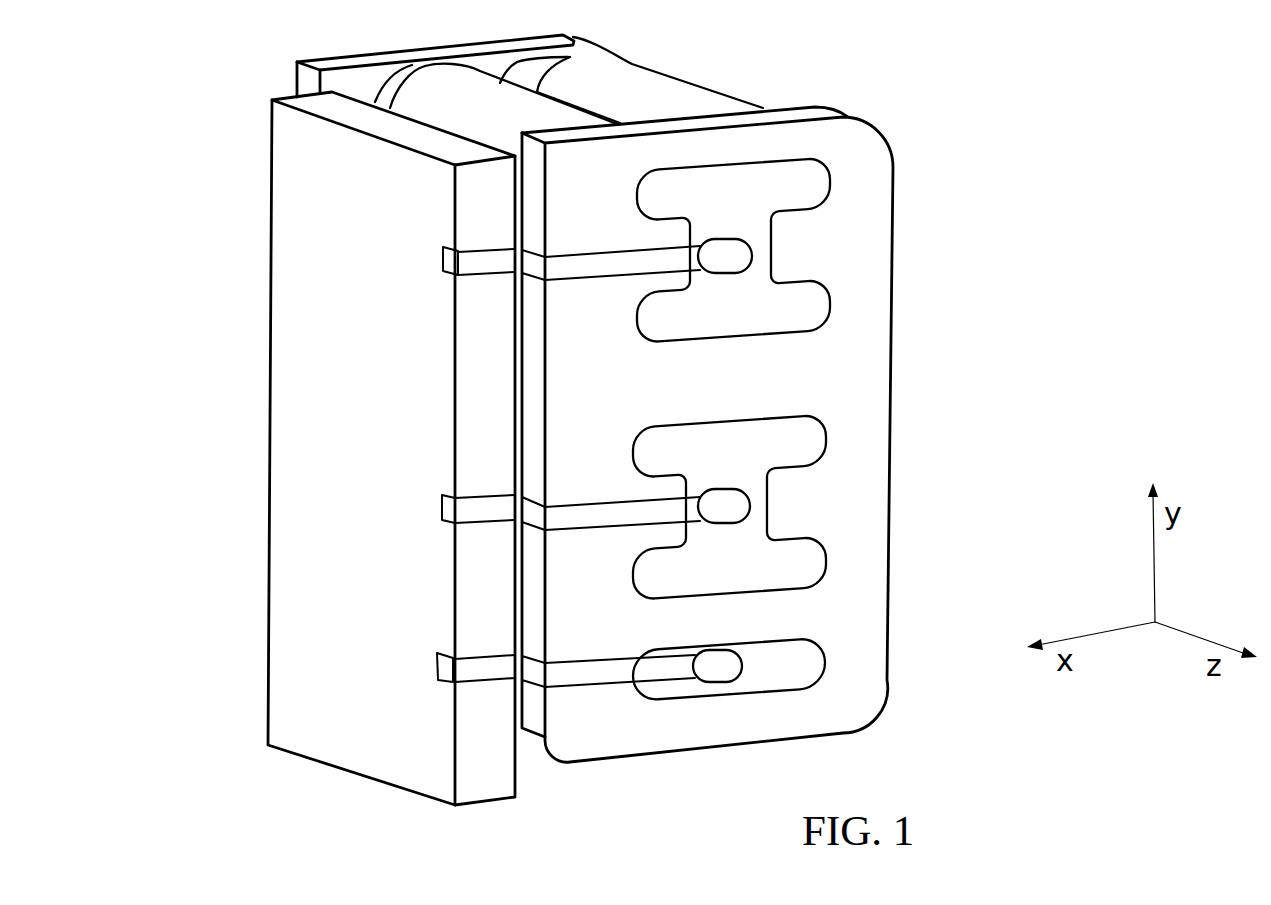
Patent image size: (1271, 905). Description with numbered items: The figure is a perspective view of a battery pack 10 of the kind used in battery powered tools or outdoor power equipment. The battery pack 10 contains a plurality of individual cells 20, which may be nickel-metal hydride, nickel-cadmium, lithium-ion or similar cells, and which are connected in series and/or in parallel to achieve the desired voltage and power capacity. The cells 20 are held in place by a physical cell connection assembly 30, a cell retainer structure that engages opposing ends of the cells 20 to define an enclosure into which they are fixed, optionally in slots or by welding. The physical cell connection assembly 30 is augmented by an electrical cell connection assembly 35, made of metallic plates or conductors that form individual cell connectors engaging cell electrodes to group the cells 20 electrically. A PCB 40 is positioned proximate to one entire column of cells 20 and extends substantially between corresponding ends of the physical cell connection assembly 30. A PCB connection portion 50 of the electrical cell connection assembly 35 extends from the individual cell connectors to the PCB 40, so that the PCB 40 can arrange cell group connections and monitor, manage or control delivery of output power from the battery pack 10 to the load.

The battery pack 10 is at (216, 78).
The cells 20 is at (673, 87).
The physical cell connection assembly 30 is at (360, 67).
The electrical cell connection assembly 35 is at (778, 177).
The PCB 40 is at (315, 393).
The PCB connection portion 50 is at (567, 265).